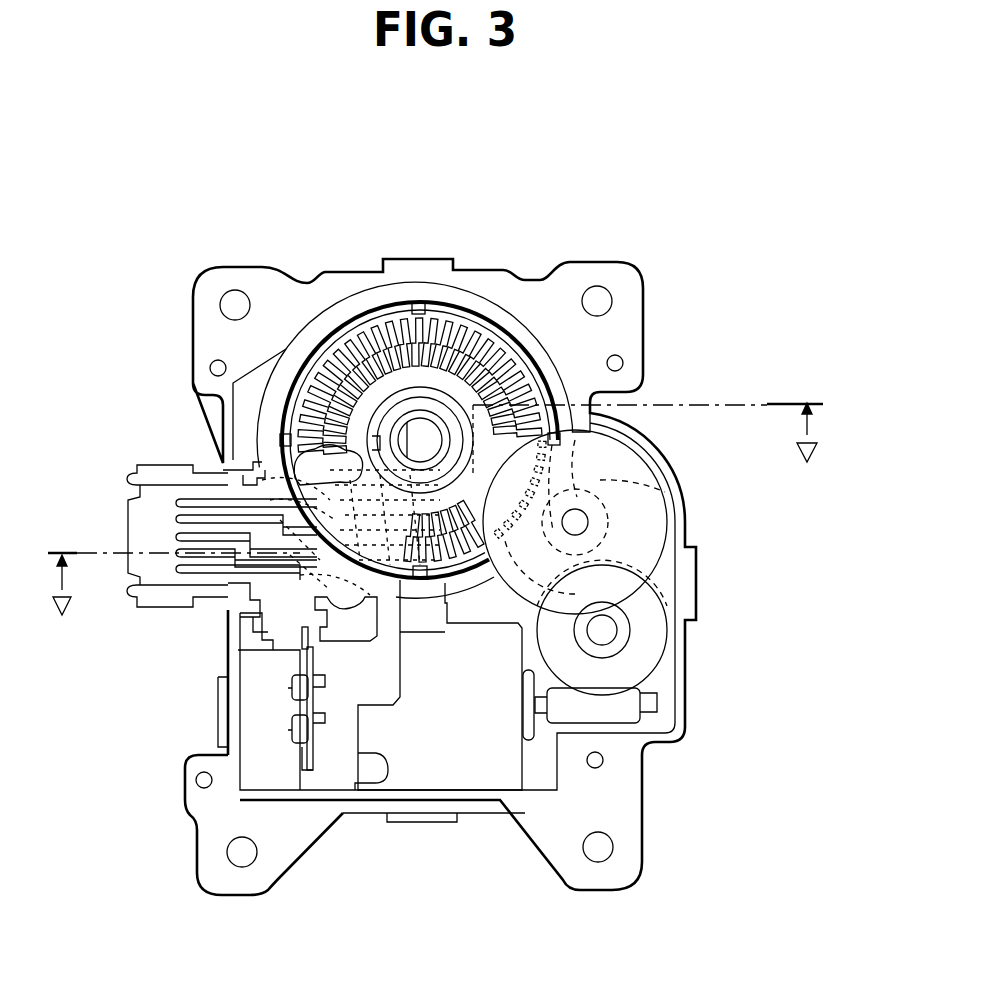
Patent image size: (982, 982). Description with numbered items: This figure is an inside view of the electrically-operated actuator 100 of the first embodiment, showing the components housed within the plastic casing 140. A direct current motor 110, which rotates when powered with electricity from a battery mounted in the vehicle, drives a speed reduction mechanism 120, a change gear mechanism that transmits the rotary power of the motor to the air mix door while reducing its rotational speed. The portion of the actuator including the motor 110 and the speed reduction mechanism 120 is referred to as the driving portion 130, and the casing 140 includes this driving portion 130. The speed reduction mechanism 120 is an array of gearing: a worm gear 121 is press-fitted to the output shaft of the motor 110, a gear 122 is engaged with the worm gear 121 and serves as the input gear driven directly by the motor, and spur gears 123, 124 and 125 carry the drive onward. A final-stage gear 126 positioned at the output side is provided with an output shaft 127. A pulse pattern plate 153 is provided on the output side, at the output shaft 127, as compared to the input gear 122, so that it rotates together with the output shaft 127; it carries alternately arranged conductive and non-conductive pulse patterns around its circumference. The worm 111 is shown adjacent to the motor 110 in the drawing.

The actuator 100 is at (650, 320).
The direct current motor 110 is at (428, 777).
The worm 111 is at (657, 702).
The speed reduction mechanism 120 is at (655, 585).
The worm gear 121 is at (623, 713).
The gear 122 is at (645, 653).
The spur gear 123 is at (623, 630).
The spur gear 124 is at (638, 506).
The spur gear 125 is at (687, 470).
The final-stage gear 126 is at (553, 410).
The output shaft 127 is at (423, 436).
The driving portion 130 is at (543, 601).
The casing 140 is at (223, 435).
The pulse pattern plate 153 is at (290, 373).